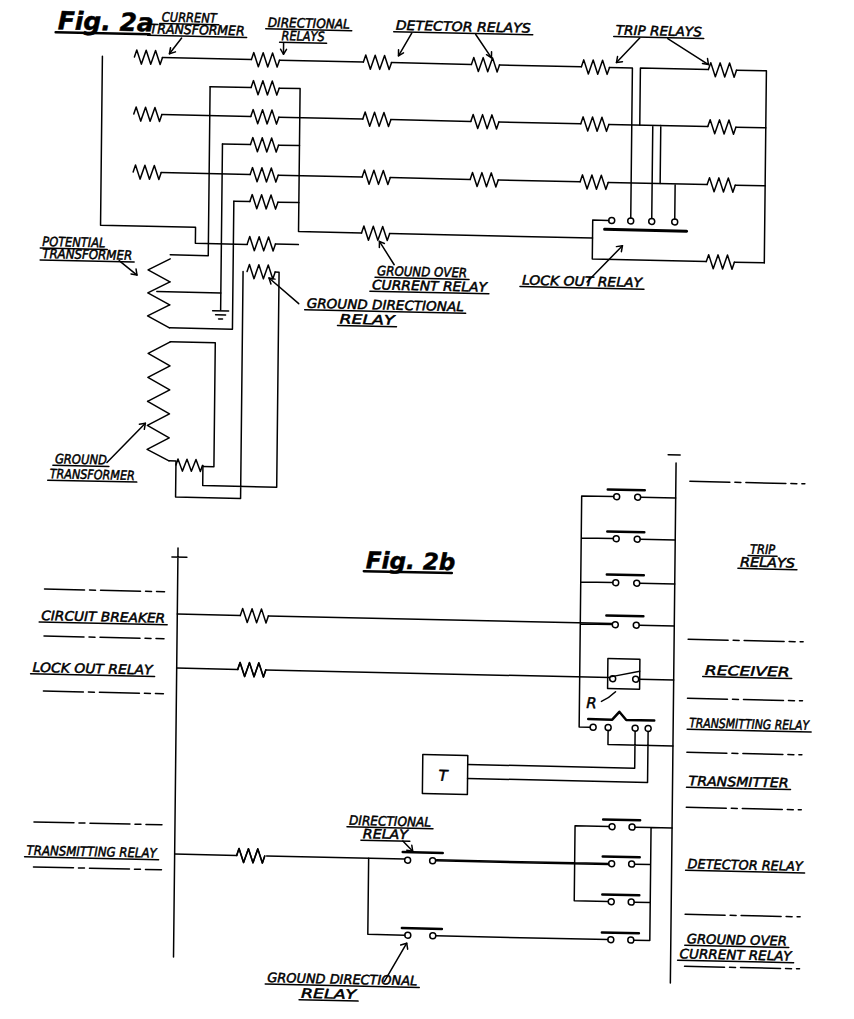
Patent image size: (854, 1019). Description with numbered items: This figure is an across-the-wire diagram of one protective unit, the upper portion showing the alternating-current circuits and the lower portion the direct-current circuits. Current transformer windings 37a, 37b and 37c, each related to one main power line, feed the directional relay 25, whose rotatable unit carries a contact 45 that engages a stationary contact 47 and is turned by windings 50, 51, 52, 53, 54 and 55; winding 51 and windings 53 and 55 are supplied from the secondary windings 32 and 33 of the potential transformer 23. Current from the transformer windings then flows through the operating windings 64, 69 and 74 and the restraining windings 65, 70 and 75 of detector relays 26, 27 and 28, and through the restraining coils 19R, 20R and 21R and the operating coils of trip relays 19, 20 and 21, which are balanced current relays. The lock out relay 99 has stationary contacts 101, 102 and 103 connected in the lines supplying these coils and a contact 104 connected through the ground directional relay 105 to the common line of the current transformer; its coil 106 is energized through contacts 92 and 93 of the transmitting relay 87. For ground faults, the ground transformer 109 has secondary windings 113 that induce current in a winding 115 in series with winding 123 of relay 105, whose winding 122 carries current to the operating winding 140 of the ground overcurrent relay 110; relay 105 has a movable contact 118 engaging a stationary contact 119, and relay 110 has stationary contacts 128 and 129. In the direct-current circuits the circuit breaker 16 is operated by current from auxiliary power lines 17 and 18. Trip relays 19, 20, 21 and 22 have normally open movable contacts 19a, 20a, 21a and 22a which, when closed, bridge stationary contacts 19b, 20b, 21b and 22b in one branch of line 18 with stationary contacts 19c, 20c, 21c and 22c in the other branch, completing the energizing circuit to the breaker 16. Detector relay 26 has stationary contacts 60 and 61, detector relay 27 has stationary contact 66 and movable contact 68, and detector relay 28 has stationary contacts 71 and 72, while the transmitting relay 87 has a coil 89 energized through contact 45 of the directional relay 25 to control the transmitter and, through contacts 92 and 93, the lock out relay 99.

In FIG. 2A, the current transformer winding 37a is at (161, 58).
In FIG. 2A, the current transformer winding 37b is at (161, 115).
In FIG. 2A, the current transformer winding 37c is at (161, 173).
In FIG. 2A, the directional relay winding 50 is at (280, 52).
In FIG. 2A, the directional relay winding 51 is at (280, 80).
In FIG. 2A, the directional relay winding 52 is at (280, 167).
In FIG. 2A, the directional relay winding 53 is at (280, 194).
In FIG. 2A, the directional relay winding 54 is at (280, 109).
In FIG. 2A, the directional relay winding 55 is at (280, 137).
In FIG. 2A, the operating winding 69 is at (392, 52).
In FIG. 2A, the operating winding 64 is at (392, 109).
In FIG. 2A, the operating winding 74 is at (392, 167).
In FIG. 2A, the restraining winding 75 is at (500, 52).
In FIG. 2A, the restraining winding 70 is at (500, 109).
In FIG. 2A, the restraining winding 65 is at (500, 167).
In FIG. 2A, the restraining coil 21R is at (579, 57).
In FIG. 2A, the restraining coil 19R is at (605, 105).
In FIG. 2A, the restraining coil 20R is at (605, 163).
In FIG. 2A, the movable contact 19a is at (741, 40).
In FIG. 2A, the movable contact 20a is at (728, 105).
In FIG. 2A, the movable contact 21a is at (728, 163).
In FIG. 2A, the movable contact 22a is at (730, 242).
In FIG. 2A, the stationary contact 104 is at (611, 204).
In FIG. 2A, the stationary contact 103 is at (628, 212).
In FIG. 2A, the stationary contact 102 is at (654, 210).
In FIG. 2A, the stationary contact 101 is at (680, 210).
In FIG. 2A, the potential transformer 23 is at (160, 288).
In FIG. 2A, the secondary winding 32 is at (156, 272).
In FIG. 2A, the secondary winding 33 is at (158, 316).
In FIG. 2A, the ground transformer 109 is at (152, 396).
In FIG. 2A, the secondary windings 113 is at (152, 405).
In FIG. 2A, the induction winding 115 is at (182, 466).
In FIG. 2A, the ground directional relay winding 122 is at (272, 232).
In FIG. 2A, the ground directional relay winding 123 is at (272, 262).
In FIG. 2A, the operating winding 140 is at (392, 223).
In FIG. 2B, the circuit breaker 16 is at (266, 603).
In FIG. 2B, the auxiliary power line 17 is at (182, 578).
In FIG. 2B, the auxiliary power line 18 is at (683, 460).
In FIG. 2B, the lock out relay 99 is at (262, 660).
In FIG. 2B, the lock out relay coil 106 is at (262, 668).
In FIG. 2B, the trip relay 19 is at (632, 472).
In FIG. 2B, the trip relay 20 is at (650, 520).
In FIG. 2B, the trip relay 21 is at (652, 564).
In FIG. 2B, the trip relay 22 is at (654, 604).
In FIG. 2B, the stationary contact 19b is at (645, 486).
In FIG. 2B, the stationary contact 19c is at (619, 486).
In FIG. 2B, the stationary contact 20b is at (645, 528).
In FIG. 2B, the stationary contact 20c is at (619, 528).
In FIG. 2B, the stationary contact 21b is at (645, 572).
In FIG. 2B, the stationary contact 21c is at (619, 572).
In FIG. 2B, the stationary contact 22b is at (645, 614).
In FIG. 2B, the stationary contact 22c is at (619, 614).
In FIG. 2B, the stationary contact 92 is at (598, 716).
In FIG. 2B, the stationary contact 93 is at (614, 717).
In FIG. 2B, the transmitting relay 87 is at (262, 842).
In FIG. 2B, the transmitting relay coil 89 is at (270, 848).
In FIG. 2B, the directional relay 25 is at (440, 840).
In FIG. 2B, the movable contact 45 is at (415, 854).
In FIG. 2B, the stationary contact 47 is at (444, 854).
In FIG. 2B, the ground directional relay 105 is at (442, 915).
In FIG. 2B, the stationary contact 119 is at (415, 929).
In FIG. 2B, the movable contact 118 is at (445, 929).
In FIG. 2B, the detector relay 26 is at (606, 804).
In FIG. 2B, the detector relay 27 is at (604, 842).
In FIG. 2B, the detector relay 28 is at (606, 878).
In FIG. 2B, the stationary contact 60 is at (618, 816).
In FIG. 2B, the stationary contact 61 is at (639, 816).
In FIG. 2B, the stationary contact 66 is at (618, 853).
In FIG. 2B, the movable contact 68 is at (639, 853).
In FIG. 2B, the stationary contact 71 is at (618, 891).
In FIG. 2B, the stationary contact 72 is at (639, 891).
In FIG. 2B, the ground overcurrent relay 110 is at (618, 935).
In FIG. 2B, the stationary contact 129 is at (618, 929).
In FIG. 2B, the stationary contact 128 is at (642, 929).